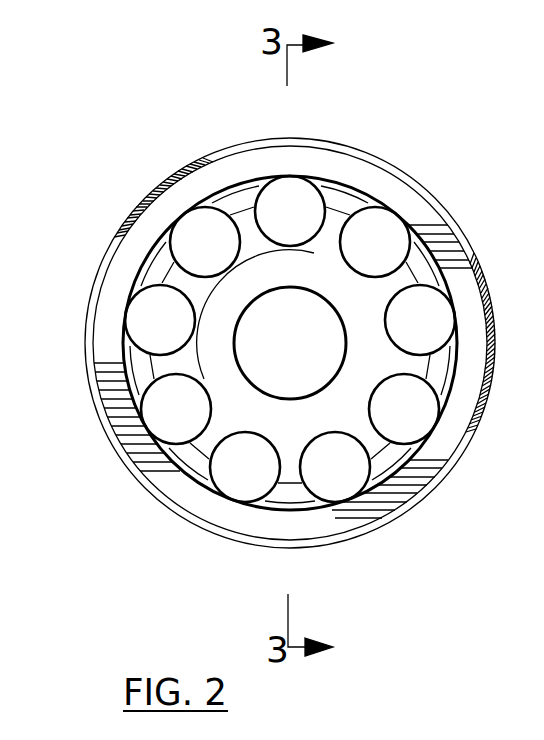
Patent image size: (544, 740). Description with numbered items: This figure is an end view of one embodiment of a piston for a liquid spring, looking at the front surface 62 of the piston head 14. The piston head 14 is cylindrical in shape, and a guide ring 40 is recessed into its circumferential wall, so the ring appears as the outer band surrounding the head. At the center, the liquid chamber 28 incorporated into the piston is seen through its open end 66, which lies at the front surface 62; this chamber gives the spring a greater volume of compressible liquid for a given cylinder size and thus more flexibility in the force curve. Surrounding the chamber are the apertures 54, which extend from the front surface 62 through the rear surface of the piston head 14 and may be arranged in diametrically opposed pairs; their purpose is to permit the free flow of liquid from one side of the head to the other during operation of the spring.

The piston head 14 is at (332, 515).
The liquid chamber 28 is at (326, 345).
The guide ring 40 is at (100, 273).
The apertures 54 is at (294, 196).
The front surface 62 is at (145, 224).
The open end 66 is at (113, 367).